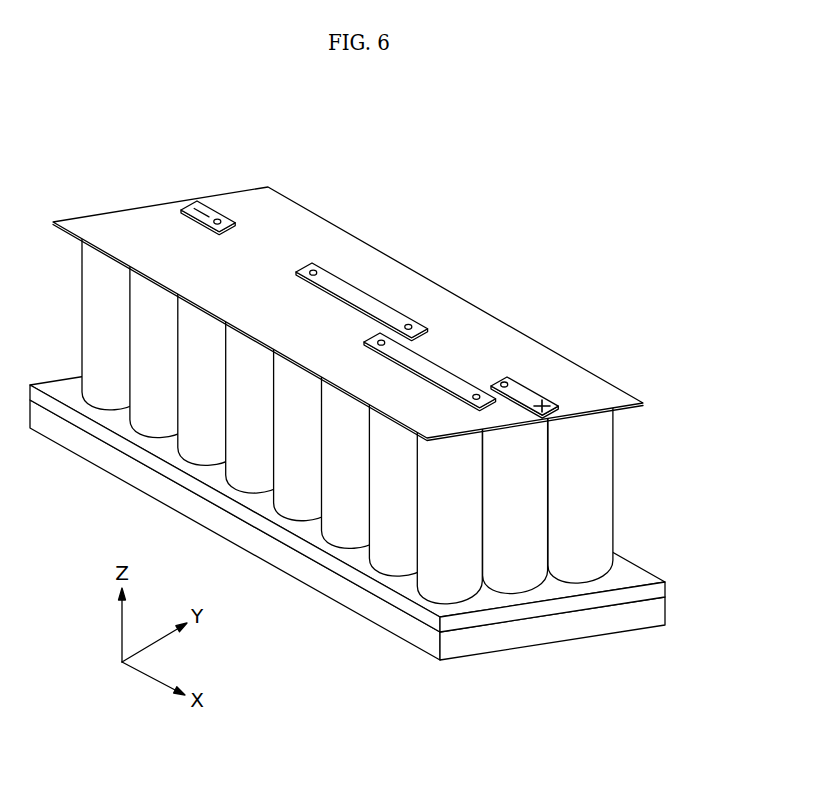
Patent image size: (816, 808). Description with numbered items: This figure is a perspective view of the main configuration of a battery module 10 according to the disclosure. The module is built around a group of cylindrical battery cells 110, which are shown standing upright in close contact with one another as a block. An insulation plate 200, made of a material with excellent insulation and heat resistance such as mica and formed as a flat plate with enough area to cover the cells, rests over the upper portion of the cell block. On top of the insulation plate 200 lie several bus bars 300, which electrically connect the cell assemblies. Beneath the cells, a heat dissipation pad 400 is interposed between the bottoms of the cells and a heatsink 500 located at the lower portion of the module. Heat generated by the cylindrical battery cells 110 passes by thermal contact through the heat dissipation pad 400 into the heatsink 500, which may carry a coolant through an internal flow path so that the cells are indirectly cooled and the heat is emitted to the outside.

The battery module 10 is at (155, 117).
The cylindrical battery cell 110 is at (636, 471).
The insulation plate 200 is at (573, 351).
The bus bar 300 is at (390, 295).
The heat dissipation pad 400 is at (662, 547).
The heatsink 500 is at (547, 660).